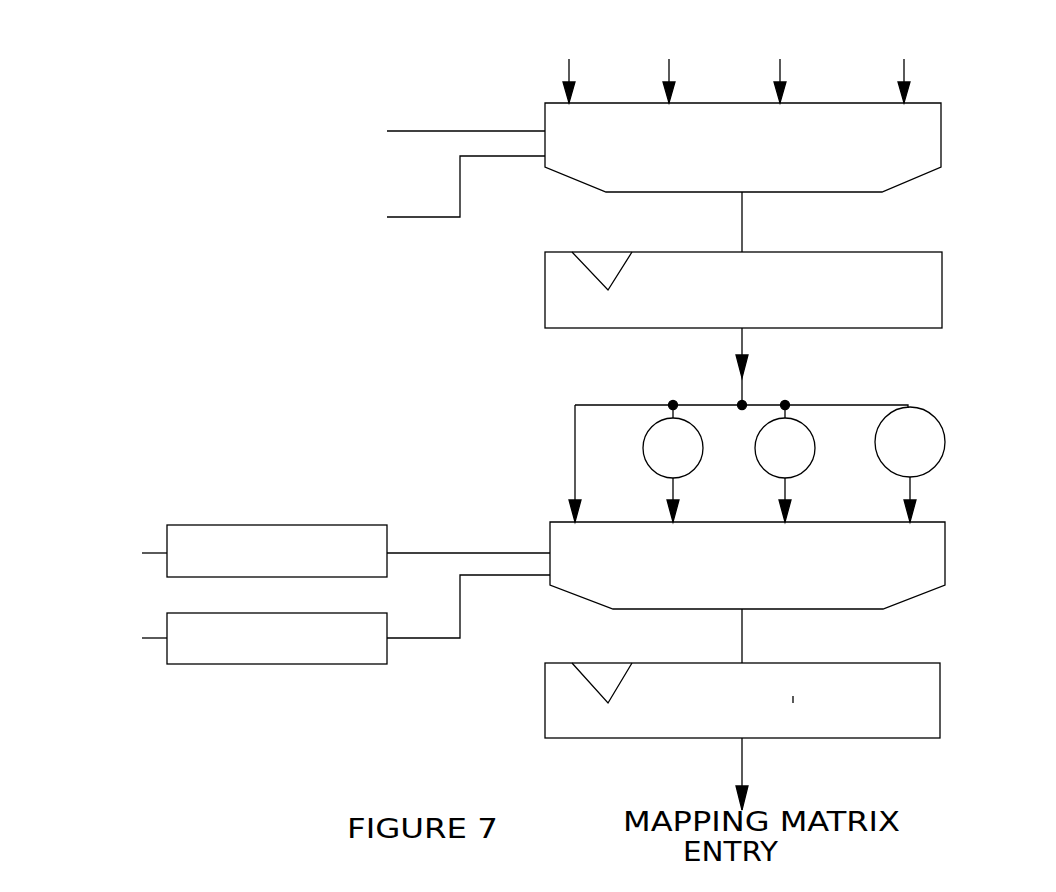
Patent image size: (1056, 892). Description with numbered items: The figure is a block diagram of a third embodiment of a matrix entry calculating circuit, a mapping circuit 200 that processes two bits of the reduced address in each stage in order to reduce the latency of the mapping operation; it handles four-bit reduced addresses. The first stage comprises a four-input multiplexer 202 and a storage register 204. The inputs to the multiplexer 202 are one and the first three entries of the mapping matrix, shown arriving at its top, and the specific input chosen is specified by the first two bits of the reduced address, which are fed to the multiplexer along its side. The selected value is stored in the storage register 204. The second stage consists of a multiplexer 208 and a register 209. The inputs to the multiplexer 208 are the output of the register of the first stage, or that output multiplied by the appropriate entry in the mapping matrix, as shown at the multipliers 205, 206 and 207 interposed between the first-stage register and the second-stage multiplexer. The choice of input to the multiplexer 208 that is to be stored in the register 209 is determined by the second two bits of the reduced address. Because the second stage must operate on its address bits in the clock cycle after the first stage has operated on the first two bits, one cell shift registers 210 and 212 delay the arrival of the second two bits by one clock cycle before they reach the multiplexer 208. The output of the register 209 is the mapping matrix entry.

The mapping circuit 200 is at (244, 154).
The 4-input multiplexer 202 is at (922, 158).
The storage register 204 is at (922, 293).
The mapping matrix entry multiplier 205 is at (653, 420).
The mapping matrix entry multiplier 206 is at (793, 420).
The mapping matrix entry multiplier 207 is at (922, 420).
The multiplexer 208 is at (933, 577).
The register 209 is at (922, 700).
The one cell shift register 210 is at (310, 532).
The one cell shift register 212 is at (273, 655).